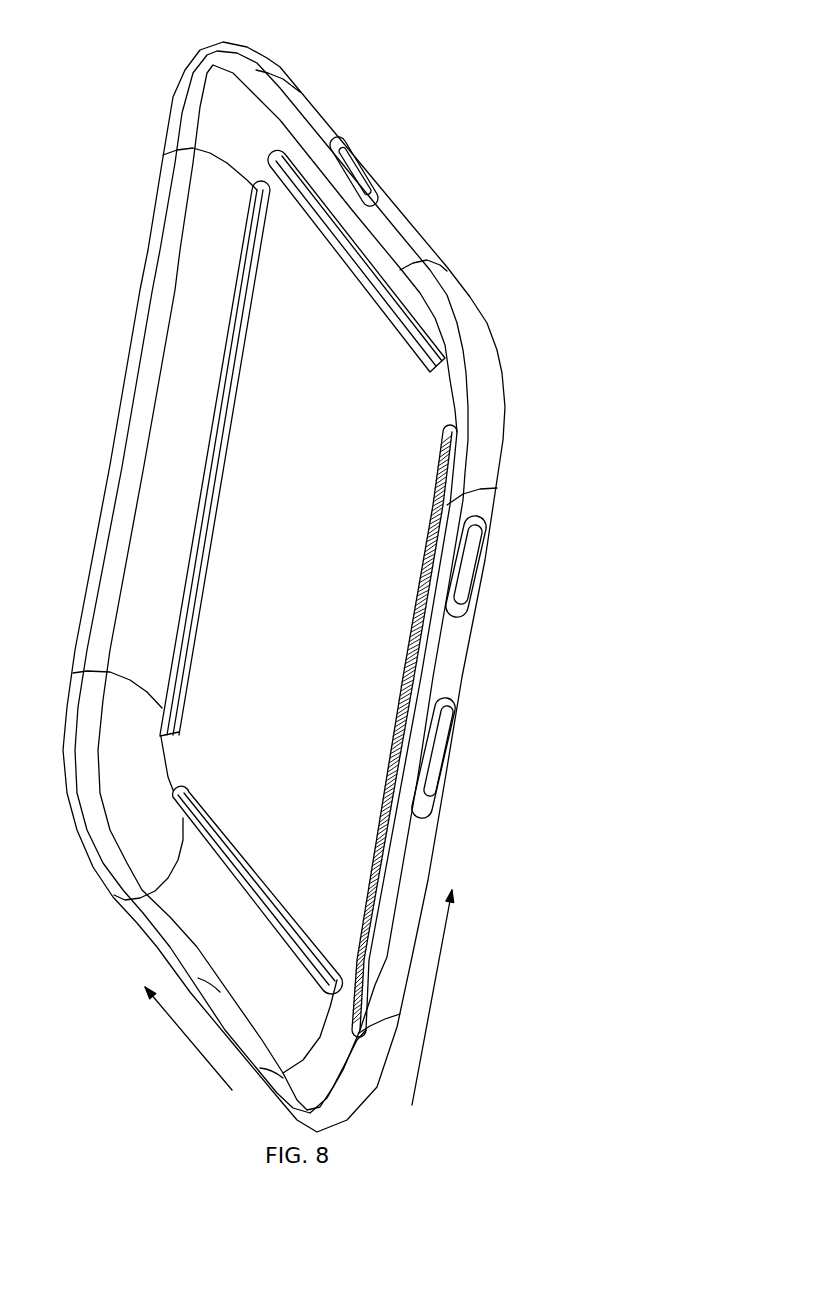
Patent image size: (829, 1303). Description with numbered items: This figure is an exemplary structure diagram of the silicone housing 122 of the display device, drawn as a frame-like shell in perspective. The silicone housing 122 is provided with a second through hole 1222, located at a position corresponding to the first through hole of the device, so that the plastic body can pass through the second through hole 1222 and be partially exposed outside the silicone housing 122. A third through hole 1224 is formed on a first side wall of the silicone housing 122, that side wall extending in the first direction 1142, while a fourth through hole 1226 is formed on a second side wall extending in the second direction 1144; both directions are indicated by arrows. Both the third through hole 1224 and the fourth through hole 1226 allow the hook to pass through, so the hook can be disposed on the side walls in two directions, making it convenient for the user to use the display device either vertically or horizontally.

The silicone housing 122 is at (497, 357).
The second through hole 1222 is at (458, 563).
The third through hole 1224 is at (428, 748).
The fourth through hole 1226 is at (363, 180).
The first direction 1142 is at (456, 997).
The second direction 1144 is at (166, 1038).